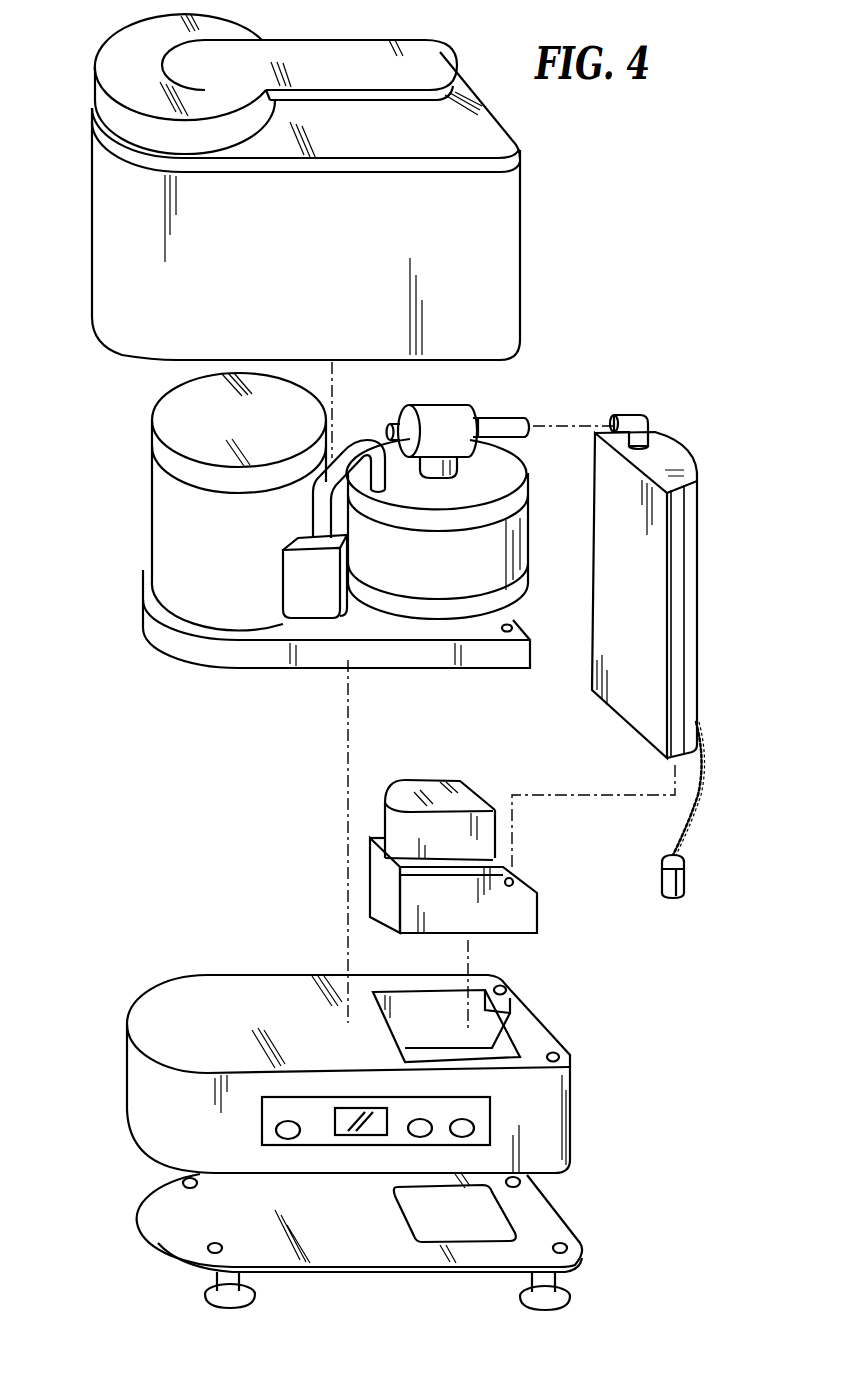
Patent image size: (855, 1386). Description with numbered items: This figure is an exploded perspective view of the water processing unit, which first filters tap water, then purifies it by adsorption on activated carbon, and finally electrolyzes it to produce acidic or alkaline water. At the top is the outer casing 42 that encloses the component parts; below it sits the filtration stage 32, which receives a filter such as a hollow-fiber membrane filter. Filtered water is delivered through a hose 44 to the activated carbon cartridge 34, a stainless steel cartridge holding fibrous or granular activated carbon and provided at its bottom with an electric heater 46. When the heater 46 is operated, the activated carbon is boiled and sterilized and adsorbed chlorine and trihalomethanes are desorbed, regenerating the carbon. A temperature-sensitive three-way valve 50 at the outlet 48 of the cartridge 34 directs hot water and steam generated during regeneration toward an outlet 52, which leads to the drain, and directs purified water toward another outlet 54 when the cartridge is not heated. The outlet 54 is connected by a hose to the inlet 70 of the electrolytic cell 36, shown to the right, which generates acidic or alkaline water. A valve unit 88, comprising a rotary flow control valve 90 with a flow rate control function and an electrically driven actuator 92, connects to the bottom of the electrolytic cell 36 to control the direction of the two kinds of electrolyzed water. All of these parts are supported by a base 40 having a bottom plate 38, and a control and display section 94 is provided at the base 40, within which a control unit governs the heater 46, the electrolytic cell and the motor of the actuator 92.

The filtration stage 32 is at (134, 542).
The activated carbon cartridge 34 is at (353, 621).
The electrolytic cell 36 is at (669, 410).
The bottom plate 38 is at (170, 1203).
The base 40 is at (157, 1013).
The outer casing 42 is at (118, 287).
The hose 44 is at (340, 456).
The electric heater 46 is at (460, 622).
The outlet 48 is at (433, 478).
The temperature-sensitive three-way valve 50 is at (452, 414).
The outlet 52 is at (393, 422).
The outlet 54 is at (507, 421).
The inlet 70 is at (630, 412).
The valve unit 88 is at (461, 857).
The rotary flow control valve 90 is at (385, 893).
The electrically driven actuator 92 is at (463, 797).
The control and display section 94 is at (572, 1117).